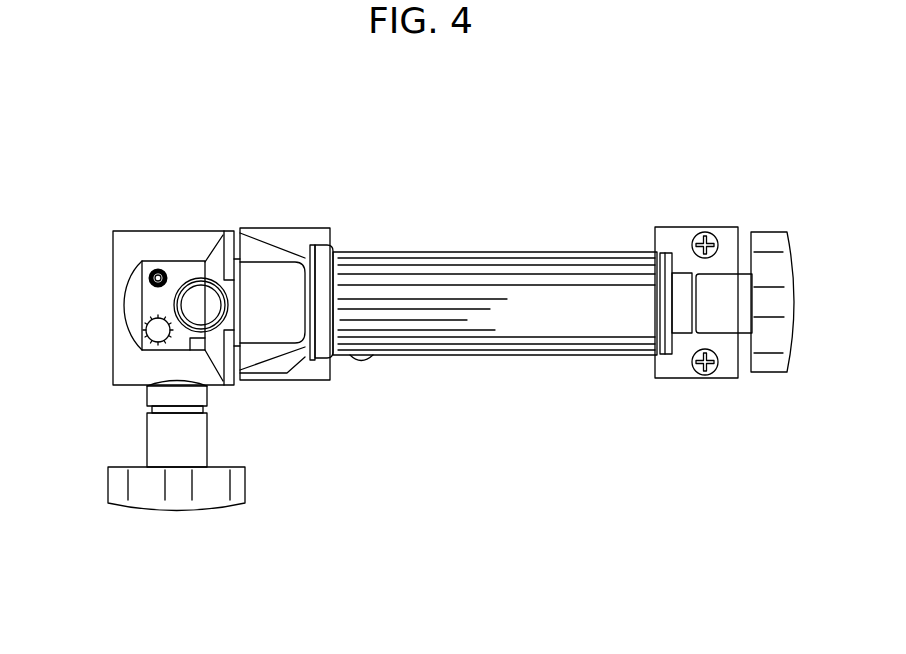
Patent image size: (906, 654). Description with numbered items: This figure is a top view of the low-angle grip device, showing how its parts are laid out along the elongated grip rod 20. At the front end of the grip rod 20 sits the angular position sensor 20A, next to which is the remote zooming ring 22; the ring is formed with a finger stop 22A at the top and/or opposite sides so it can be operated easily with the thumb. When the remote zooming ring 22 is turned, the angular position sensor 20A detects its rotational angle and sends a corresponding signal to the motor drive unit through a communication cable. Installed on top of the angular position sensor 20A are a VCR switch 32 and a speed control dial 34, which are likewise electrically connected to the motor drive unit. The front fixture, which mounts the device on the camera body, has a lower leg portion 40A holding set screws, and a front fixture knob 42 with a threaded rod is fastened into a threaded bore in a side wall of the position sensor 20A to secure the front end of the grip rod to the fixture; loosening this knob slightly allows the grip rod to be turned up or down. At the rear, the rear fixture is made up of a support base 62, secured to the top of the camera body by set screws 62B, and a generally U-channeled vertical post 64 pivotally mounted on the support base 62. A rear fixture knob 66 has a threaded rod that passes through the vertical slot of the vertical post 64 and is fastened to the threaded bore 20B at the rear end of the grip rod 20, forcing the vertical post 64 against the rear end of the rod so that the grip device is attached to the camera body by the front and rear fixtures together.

The grip rod 20 is at (477, 252).
The angular position sensor 20A is at (130, 242).
The threaded bore 20B is at (660, 228).
The remote zooming ring 22 is at (253, 352).
The finger stop 22A is at (282, 237).
The VCR switch 32 is at (200, 290).
The speed control dial 34 is at (155, 347).
The lower leg portion 40A is at (323, 238).
The front fixture knob 42 is at (232, 507).
The support base 62 is at (672, 368).
The set screws 62B is at (713, 227).
The vertical post 64 is at (682, 273).
The rear fixture knob 66 is at (775, 372).